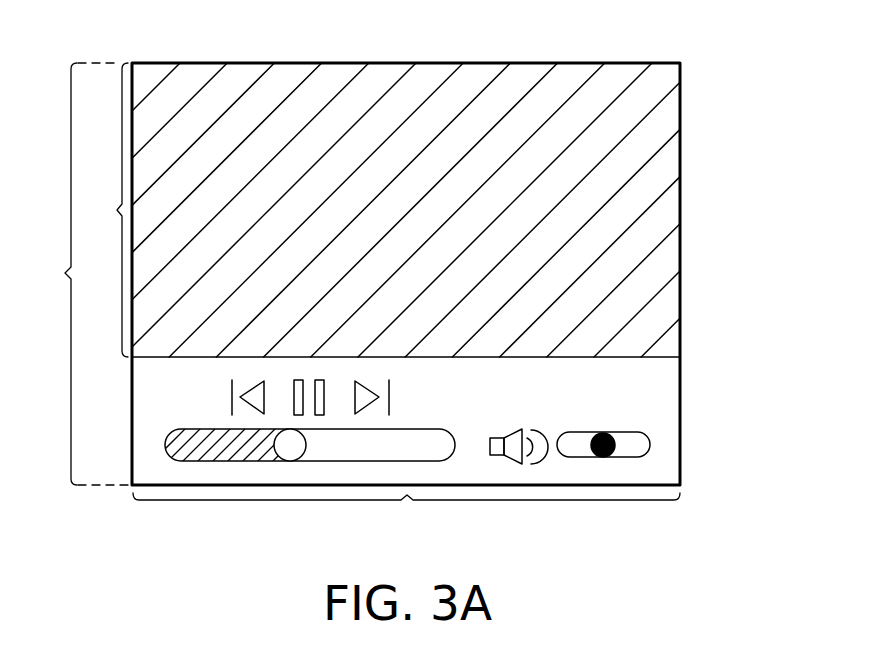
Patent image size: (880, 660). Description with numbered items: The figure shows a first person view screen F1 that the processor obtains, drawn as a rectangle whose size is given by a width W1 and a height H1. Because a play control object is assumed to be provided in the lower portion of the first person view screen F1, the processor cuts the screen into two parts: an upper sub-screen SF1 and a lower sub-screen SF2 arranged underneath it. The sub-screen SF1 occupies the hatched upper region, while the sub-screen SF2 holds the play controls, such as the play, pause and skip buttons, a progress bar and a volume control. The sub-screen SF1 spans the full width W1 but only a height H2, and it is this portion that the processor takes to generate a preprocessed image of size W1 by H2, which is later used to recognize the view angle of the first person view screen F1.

The first person view screen F1 is at (627, 63).
The sub-screen SF1 is at (665, 259).
The sub-screen SF2 is at (665, 403).
The height of first person view screen H1 is at (83, 274).
The height of preprocessed image H2 is at (106, 210).
The width of first person view screen W1 is at (406, 515).